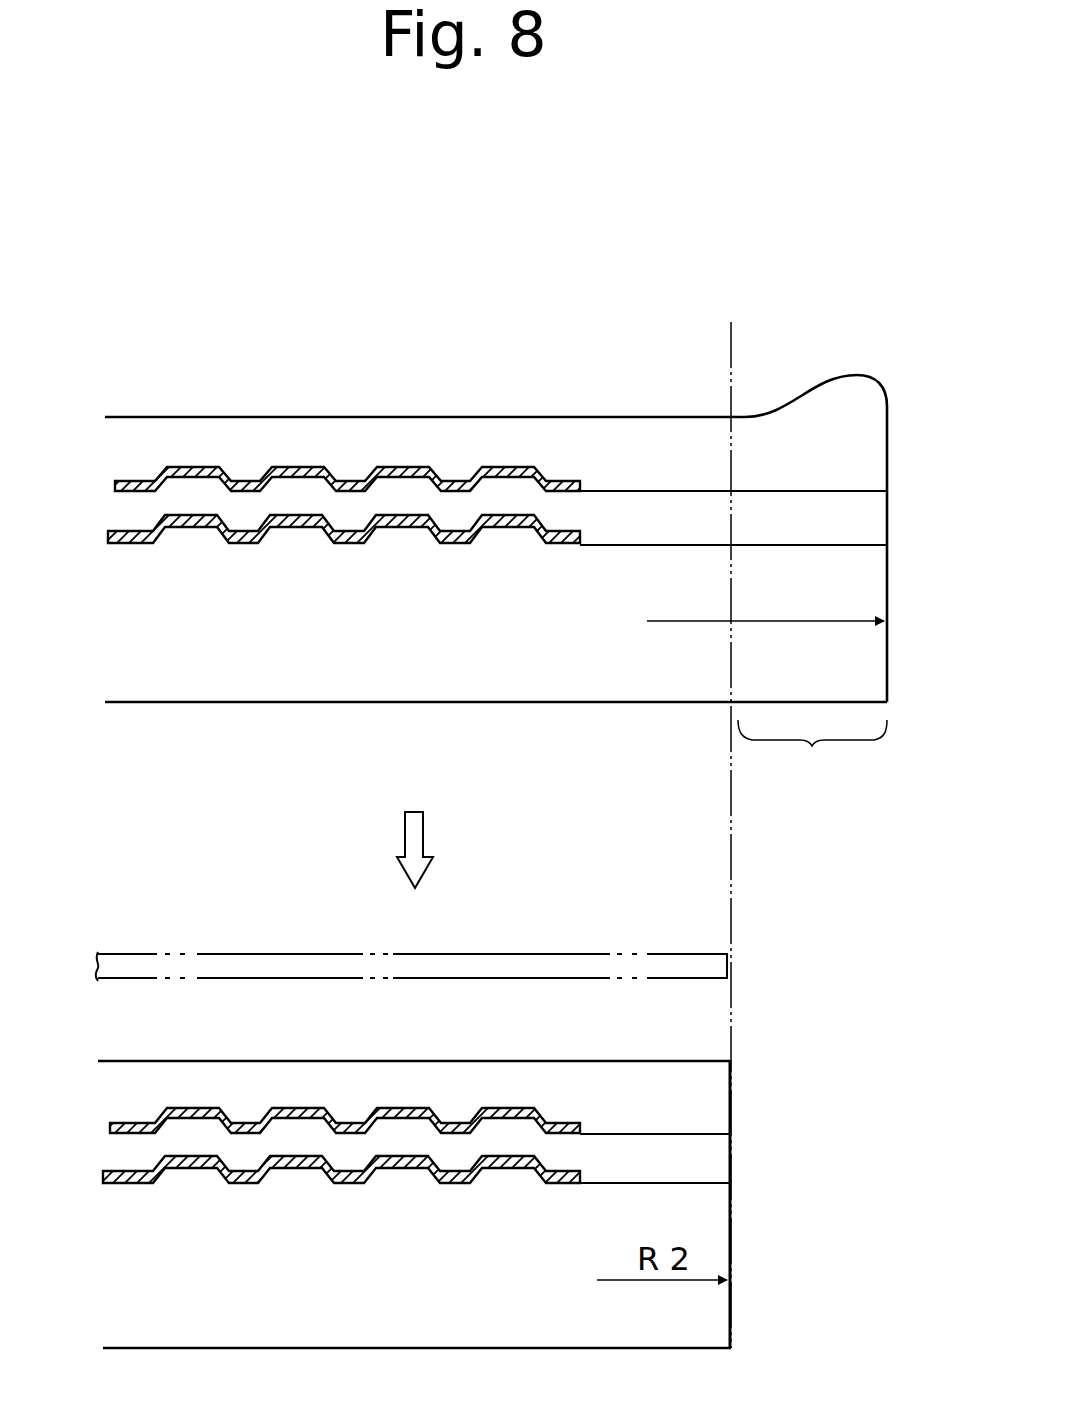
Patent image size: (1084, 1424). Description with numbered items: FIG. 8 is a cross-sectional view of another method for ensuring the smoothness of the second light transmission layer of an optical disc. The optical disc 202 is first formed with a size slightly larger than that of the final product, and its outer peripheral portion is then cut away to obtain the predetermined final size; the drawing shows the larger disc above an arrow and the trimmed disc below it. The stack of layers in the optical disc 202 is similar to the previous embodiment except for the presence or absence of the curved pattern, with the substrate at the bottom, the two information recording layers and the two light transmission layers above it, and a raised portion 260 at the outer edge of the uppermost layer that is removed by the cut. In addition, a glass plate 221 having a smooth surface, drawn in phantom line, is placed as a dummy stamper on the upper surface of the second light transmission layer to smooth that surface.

The optical disc 202 is at (499, 484).
The glass plate 221 is at (680, 953).
The raised edge portion 260 is at (848, 392).